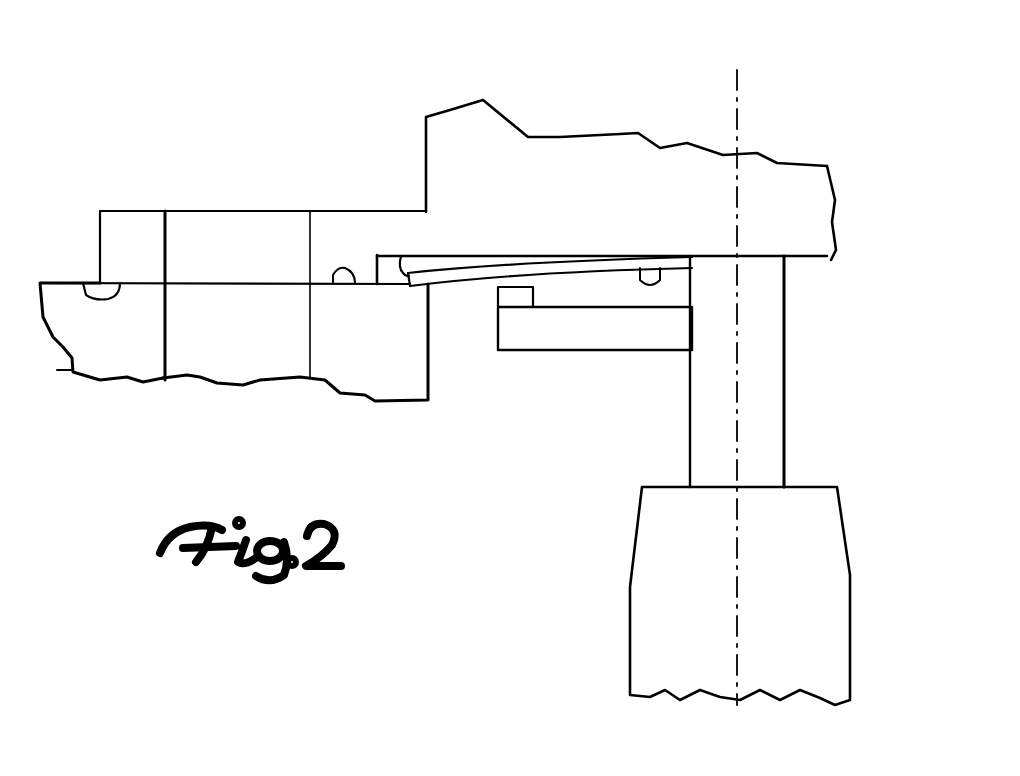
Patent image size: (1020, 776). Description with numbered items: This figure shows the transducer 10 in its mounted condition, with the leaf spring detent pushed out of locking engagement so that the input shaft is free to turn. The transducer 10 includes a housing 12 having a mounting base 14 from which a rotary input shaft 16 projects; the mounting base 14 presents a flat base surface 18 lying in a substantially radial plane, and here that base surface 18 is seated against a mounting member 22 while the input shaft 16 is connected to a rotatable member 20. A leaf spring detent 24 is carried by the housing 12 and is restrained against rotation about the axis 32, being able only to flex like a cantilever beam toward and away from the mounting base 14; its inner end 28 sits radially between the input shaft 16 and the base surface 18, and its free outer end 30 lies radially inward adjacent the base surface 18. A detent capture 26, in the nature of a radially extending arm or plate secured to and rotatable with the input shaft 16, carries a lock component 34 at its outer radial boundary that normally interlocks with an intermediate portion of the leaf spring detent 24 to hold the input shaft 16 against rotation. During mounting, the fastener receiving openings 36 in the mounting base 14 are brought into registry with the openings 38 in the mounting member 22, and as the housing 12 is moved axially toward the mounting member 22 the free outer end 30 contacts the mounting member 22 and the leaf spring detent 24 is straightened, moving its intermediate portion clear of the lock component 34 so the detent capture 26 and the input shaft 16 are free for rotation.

The transducer 10 is at (602, 151).
The housing 12 is at (548, 161).
The mounting base 14 is at (810, 250).
The input shaft 16 is at (706, 437).
The base surface 18 is at (84, 283).
The rotatable member 20 is at (800, 542).
The mounting member 22 is at (355, 284).
The leaf spring detent 24 is at (470, 288).
The detent capture 26 is at (598, 330).
The inner end 28 is at (660, 268).
The free outer end 30 is at (401, 256).
The axis 32 is at (738, 412).
The lock component 34 is at (511, 294).
The fastener receiving openings 36 is at (193, 232).
The openings 38 is at (225, 305).